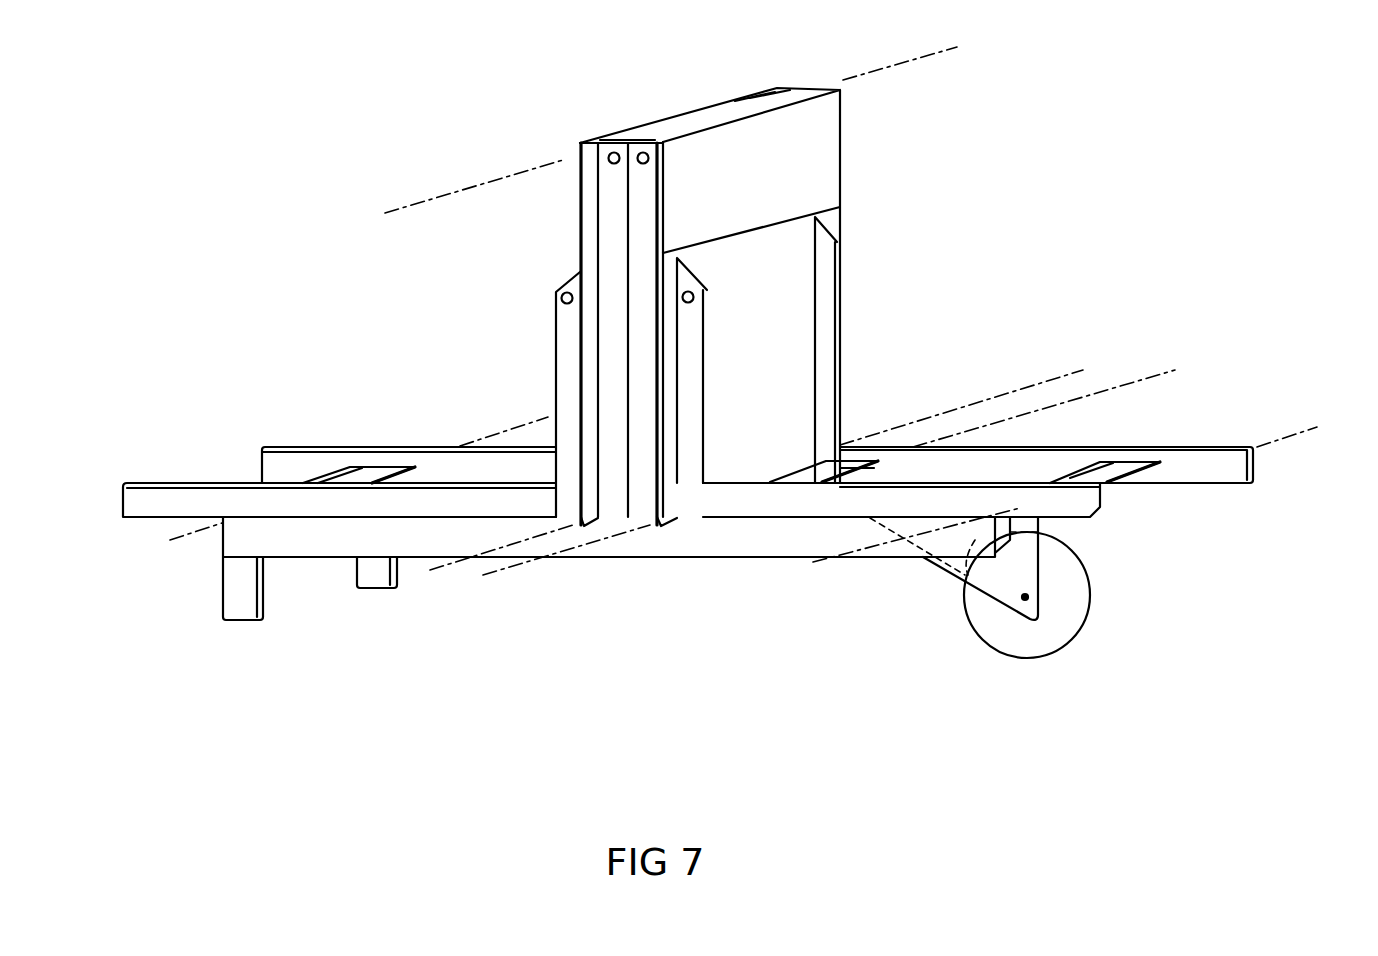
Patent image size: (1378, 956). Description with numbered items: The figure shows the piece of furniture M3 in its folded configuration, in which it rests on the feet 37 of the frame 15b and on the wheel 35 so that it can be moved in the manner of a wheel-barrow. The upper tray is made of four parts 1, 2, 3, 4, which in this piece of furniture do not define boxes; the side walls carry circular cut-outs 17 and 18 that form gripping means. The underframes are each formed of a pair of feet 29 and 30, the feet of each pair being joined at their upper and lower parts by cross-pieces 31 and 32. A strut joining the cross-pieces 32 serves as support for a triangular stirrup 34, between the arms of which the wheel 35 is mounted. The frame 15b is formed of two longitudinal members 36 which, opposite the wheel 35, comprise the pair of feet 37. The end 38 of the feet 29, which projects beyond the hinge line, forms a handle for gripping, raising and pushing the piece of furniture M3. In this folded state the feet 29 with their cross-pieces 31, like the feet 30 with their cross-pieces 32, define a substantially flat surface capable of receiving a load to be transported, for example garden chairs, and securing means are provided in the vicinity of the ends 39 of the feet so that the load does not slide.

The tray part 1 is at (570, 358).
The tray part 2 is at (620, 226).
The tray part 3 is at (790, 147).
The tray part 4 is at (785, 298).
The circular cut-out 17 is at (560, 299).
The circular cut-out 18 is at (641, 152).
The feet 29 is at (225, 505).
The feet 30 is at (966, 500).
The cross-piece 31 is at (372, 470).
The cross-piece 32 is at (845, 458).
The triangular stirrup 34 is at (990, 577).
The wheel 35 is at (1070, 597).
The longitudinal member 36 is at (768, 555).
The feet 37 is at (245, 600).
The end of feet 38 is at (280, 467).
The end of feet 39 is at (1225, 450).
The frame 15b is at (690, 617).
The piece of furniture M3 is at (1072, 228).